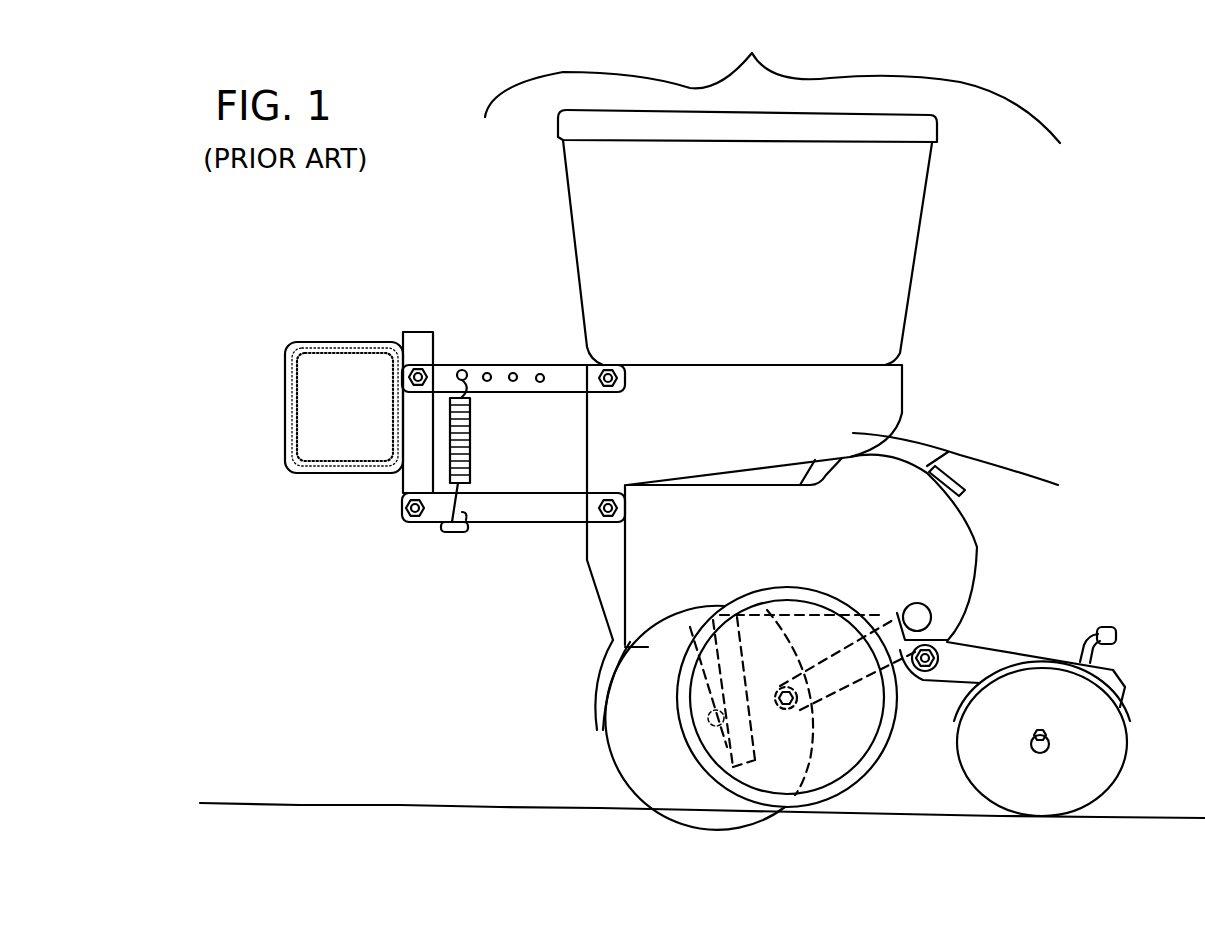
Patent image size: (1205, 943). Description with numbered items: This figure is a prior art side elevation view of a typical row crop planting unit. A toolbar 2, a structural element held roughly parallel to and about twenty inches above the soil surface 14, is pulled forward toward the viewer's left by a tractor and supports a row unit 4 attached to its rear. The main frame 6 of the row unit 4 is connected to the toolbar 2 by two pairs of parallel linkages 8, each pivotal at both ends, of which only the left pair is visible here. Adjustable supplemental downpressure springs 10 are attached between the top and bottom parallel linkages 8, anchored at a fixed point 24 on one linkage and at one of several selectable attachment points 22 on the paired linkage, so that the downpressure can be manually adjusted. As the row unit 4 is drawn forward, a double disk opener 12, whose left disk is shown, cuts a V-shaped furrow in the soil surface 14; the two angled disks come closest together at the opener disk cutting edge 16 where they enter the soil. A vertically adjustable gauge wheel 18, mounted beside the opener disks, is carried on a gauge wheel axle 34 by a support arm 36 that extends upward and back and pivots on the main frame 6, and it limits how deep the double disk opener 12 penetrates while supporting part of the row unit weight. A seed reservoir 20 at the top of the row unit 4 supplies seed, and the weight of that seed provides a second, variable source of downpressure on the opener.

The toolbar 2 is at (353, 467).
The row unit 4 is at (772, 76).
The main frame 6 is at (935, 550).
The parallel linkages 8 is at (518, 395).
The adjustable supplemental downpressure springs 10 is at (480, 442).
The double disk opener 12 is at (598, 750).
The soil surface 14 is at (461, 800).
The opener disk cutting edge 16 is at (625, 807).
The gauge wheel 18 is at (823, 590).
The seed reservoir 20 is at (895, 265).
The selectable attachment points 22 is at (540, 372).
The fixed point 24 is at (450, 534).
The gauge wheel axle 34 is at (793, 707).
The support arm 36 is at (890, 630).